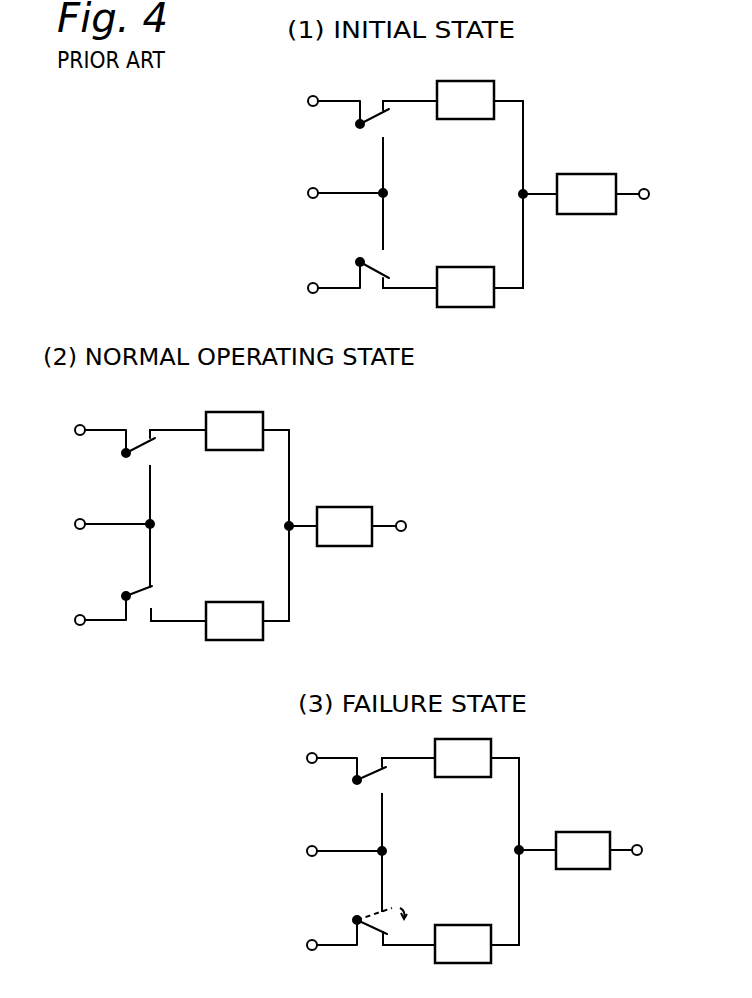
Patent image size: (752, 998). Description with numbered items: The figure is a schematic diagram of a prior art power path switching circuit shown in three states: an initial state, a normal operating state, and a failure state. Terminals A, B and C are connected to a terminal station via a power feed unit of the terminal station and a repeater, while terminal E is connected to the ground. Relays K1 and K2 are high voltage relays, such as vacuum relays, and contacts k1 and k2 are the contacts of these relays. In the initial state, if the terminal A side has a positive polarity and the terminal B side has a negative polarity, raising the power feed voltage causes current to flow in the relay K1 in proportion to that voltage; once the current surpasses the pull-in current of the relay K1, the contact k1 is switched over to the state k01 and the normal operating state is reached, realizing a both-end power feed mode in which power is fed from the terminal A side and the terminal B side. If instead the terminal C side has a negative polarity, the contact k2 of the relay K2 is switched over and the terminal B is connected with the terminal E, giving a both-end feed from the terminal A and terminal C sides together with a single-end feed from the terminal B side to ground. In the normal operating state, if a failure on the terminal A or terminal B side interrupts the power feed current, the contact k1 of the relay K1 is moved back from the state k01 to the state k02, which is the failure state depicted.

The terminal B is at (203, 429).
The terminal E is at (217, 521).
The terminal C is at (203, 617).
The terminal A is at (532, 522).
The relay K1 is at (350, 429).
The relay K2 is at (350, 615).
The contact k1 is at (271, 589).
The contact k2 is at (271, 442).
The state k01 is at (289, 741).
The state k02 is at (293, 772).